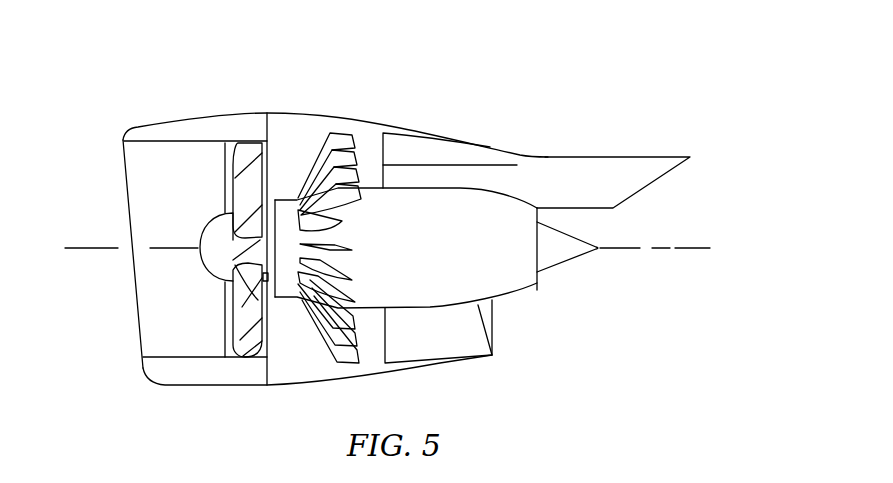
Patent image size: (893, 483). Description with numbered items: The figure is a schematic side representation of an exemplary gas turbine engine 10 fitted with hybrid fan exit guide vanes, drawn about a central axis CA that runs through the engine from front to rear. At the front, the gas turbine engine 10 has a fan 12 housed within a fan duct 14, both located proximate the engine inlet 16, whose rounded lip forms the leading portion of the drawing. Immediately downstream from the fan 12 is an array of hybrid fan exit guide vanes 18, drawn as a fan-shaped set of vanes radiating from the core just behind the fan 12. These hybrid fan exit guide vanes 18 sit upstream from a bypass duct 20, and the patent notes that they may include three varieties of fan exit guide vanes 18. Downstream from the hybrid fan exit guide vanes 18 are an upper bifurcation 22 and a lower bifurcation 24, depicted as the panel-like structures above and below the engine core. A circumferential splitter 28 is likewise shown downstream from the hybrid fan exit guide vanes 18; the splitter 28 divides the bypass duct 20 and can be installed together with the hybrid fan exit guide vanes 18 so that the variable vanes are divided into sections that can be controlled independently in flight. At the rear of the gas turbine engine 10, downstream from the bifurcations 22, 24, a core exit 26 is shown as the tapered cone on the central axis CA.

The gas turbine engine 10 is at (146, 83).
The fan 12 is at (253, 143).
The fan duct 14 is at (298, 137).
The engine inlet 16 is at (148, 195).
The hybrid fan exit guide vanes 18 is at (343, 130).
The bypass duct 20 is at (367, 157).
The upper bifurcation 22 is at (443, 150).
The lower bifurcation 24 is at (452, 345).
The core exit 26 is at (540, 285).
The splitter 28 is at (497, 165).
The central axis CA is at (712, 248).